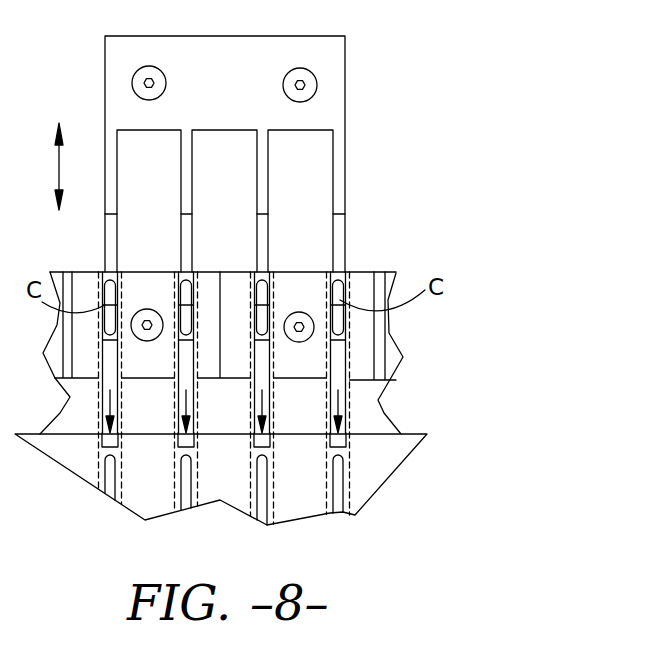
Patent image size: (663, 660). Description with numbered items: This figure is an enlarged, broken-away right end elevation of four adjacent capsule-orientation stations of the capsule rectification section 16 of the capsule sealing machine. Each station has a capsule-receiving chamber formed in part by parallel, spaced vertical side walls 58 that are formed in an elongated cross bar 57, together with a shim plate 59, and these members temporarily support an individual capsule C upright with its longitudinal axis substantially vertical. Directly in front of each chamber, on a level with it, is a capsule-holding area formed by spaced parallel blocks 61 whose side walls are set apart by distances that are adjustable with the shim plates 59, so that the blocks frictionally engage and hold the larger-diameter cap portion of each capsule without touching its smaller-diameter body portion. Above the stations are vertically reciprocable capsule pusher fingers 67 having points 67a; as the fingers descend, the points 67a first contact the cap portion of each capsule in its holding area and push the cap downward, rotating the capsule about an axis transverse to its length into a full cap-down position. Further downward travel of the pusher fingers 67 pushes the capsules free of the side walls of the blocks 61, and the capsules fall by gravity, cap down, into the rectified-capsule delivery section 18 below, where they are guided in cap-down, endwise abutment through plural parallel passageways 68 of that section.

The capsule rectification section 16 is at (465, 331).
The rectified-capsule delivery section 18 is at (441, 474).
The elongated cross bar 57 is at (78, 406).
The side walls 58 is at (343, 272).
The shim plate 59 is at (112, 381).
The blocks 61 is at (87, 282).
The pusher fingers 67 is at (181, 202).
The points 67a is at (337, 247).
The passageways 68 is at (118, 497).